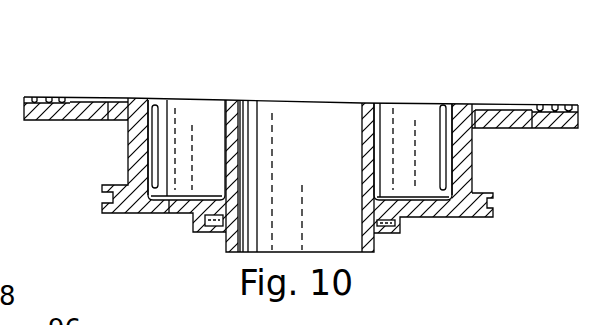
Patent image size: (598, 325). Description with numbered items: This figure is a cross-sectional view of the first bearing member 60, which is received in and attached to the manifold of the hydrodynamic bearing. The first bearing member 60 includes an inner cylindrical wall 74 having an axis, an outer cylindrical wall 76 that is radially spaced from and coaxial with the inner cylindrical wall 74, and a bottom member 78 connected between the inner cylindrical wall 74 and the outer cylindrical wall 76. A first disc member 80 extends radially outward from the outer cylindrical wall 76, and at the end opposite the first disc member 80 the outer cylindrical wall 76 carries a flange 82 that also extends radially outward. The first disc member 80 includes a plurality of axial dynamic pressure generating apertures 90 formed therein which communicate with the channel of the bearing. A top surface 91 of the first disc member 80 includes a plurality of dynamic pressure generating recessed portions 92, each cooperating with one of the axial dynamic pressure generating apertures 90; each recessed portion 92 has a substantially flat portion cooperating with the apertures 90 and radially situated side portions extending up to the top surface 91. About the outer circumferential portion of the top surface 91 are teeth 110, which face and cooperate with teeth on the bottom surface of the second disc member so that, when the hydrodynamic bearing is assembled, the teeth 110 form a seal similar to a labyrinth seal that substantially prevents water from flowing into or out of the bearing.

The first bearing member 60 is at (114, 71).
The inner cylindrical wall 74 is at (362, 123).
The outer cylindrical wall 76 is at (472, 157).
The bottom member 78 is at (410, 218).
The first disc member 80 is at (85, 120).
The flange 82 is at (504, 203).
The axial dynamic pressure generating apertures 90 is at (483, 128).
The top surface 91 is at (142, 89).
The dynamic pressure generating recessed portions 92 is at (506, 94).
The teeth 110 is at (561, 95).